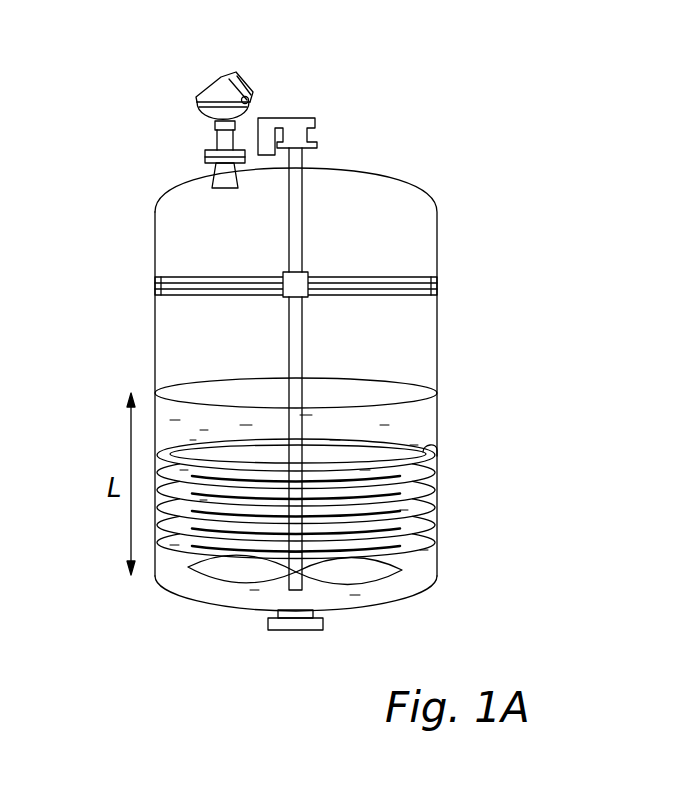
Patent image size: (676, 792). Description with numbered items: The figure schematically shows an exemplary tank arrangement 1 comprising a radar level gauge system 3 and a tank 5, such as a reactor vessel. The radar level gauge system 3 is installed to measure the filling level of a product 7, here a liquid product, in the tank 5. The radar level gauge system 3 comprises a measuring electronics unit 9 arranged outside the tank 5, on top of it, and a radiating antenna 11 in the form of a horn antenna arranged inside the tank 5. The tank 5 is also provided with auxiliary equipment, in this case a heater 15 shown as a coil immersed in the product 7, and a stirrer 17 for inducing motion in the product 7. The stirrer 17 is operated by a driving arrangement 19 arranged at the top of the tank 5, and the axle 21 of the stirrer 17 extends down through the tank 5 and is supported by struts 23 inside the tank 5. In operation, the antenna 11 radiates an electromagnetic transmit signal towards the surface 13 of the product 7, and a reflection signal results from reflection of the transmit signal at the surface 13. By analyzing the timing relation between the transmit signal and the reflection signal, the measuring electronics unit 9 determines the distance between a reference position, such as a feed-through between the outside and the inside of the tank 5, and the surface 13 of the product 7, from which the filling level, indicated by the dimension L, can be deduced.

The tank arrangement 1 is at (122, 82).
The radar level gauge system 3 is at (268, 75).
The tank 5 is at (464, 352).
The product 7 is at (410, 418).
The measuring electronics unit 9 is at (216, 86).
The radiating antenna 11 is at (213, 178).
The surface 13 is at (368, 397).
The heater 15 is at (445, 490).
The stirrer 17 is at (382, 570).
The driving arrangement 19 is at (322, 103).
The axle 21 is at (297, 213).
The struts 23 is at (212, 295).